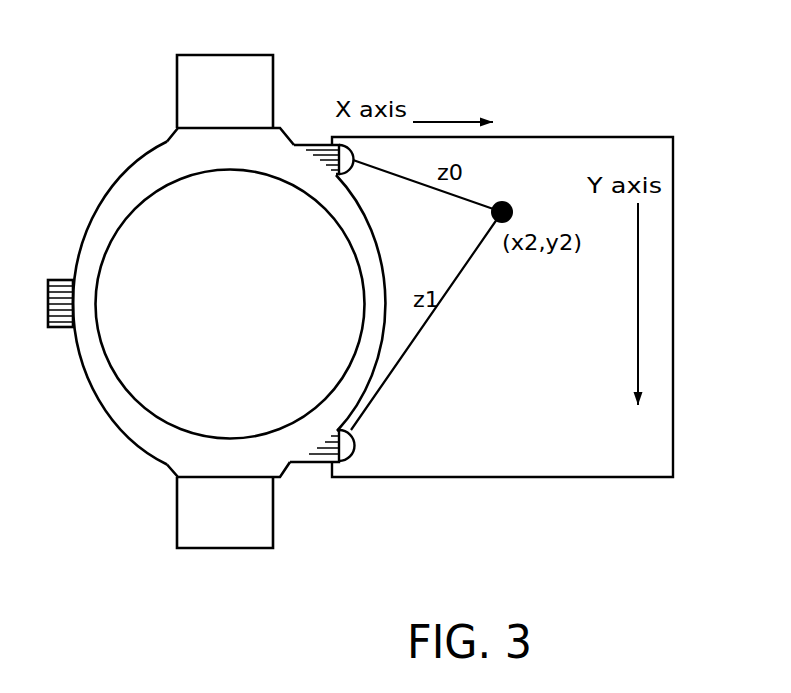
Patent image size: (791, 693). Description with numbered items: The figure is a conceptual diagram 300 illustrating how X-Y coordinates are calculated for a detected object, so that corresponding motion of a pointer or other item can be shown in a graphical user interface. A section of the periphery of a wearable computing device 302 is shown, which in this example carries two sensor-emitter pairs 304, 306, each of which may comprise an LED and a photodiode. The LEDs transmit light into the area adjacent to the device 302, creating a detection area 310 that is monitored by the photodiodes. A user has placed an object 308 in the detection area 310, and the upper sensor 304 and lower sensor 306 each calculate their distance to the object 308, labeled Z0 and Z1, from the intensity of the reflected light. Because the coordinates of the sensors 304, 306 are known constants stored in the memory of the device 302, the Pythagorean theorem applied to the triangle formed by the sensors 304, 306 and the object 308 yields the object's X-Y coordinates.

The conceptual diagram 300 is at (653, 103).
The wearable computing device 302 is at (285, 485).
The upper sensor-emitter pair 304 is at (322, 142).
The lower sensor-emitter pair 306 is at (343, 468).
The object 308 is at (500, 197).
The detection area 310 is at (535, 410).